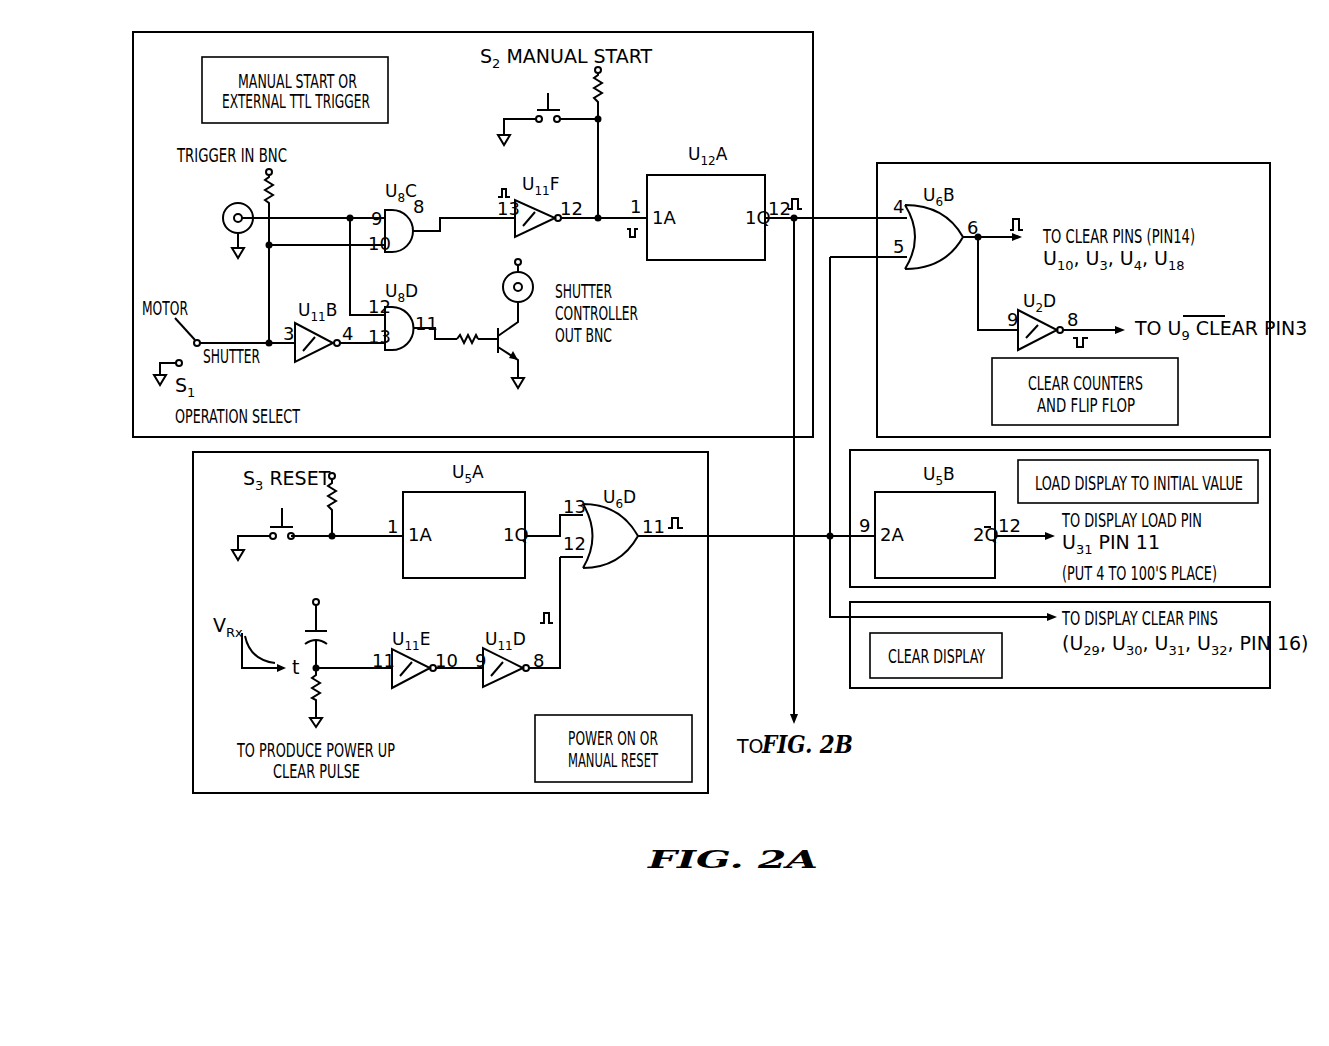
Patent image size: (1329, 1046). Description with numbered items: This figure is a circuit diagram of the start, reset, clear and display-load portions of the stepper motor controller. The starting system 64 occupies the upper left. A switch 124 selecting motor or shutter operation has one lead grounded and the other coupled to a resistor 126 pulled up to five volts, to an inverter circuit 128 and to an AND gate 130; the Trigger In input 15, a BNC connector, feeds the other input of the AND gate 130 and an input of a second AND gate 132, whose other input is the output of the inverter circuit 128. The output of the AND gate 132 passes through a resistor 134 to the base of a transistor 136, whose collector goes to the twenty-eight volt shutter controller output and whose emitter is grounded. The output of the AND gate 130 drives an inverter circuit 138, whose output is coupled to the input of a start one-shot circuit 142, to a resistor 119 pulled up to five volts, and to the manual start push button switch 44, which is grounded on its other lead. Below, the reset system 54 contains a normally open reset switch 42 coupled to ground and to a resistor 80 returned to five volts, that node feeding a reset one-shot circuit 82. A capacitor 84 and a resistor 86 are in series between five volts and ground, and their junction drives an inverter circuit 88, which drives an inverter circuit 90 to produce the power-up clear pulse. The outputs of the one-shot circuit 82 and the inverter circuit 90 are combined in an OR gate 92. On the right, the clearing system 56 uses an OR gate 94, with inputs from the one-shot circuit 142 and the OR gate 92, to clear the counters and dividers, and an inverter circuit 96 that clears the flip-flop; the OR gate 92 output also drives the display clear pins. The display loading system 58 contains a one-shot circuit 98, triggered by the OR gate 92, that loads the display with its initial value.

The starting system 64 is at (813, 50).
The reset system 54 is at (193, 467).
The clearing system 56 is at (1265, 182).
The display loading system 58 is at (1265, 467).
The resistor 126 is at (263, 185).
The Trigger In input 15 is at (225, 222).
The AND gate 130 is at (416, 228).
The inverter circuit 138 is at (520, 228).
The manual start push button switch 44 is at (545, 103).
The resistor 119 is at (600, 103).
The one-shot circuit 142 is at (715, 260).
The switch 124 is at (198, 340).
The inverter circuit 128 is at (322, 346).
The AND gate 132 is at (392, 350).
The resistor 134 is at (462, 334).
The transistor 136 is at (530, 347).
The OR gate 94 is at (930, 258).
The inverter circuit 96 is at (1018, 338).
The resistor 80 is at (330, 487).
The reset switch 42 is at (278, 515).
The one-shot circuit 82 is at (448, 578).
The OR gate 92 is at (605, 556).
The capacitor 84 is at (313, 631).
The resistor 86 is at (312, 687).
The inverter circuit 88 is at (403, 688).
The inverter circuit 90 is at (493, 687).
The one-shot circuit 98 is at (988, 557).